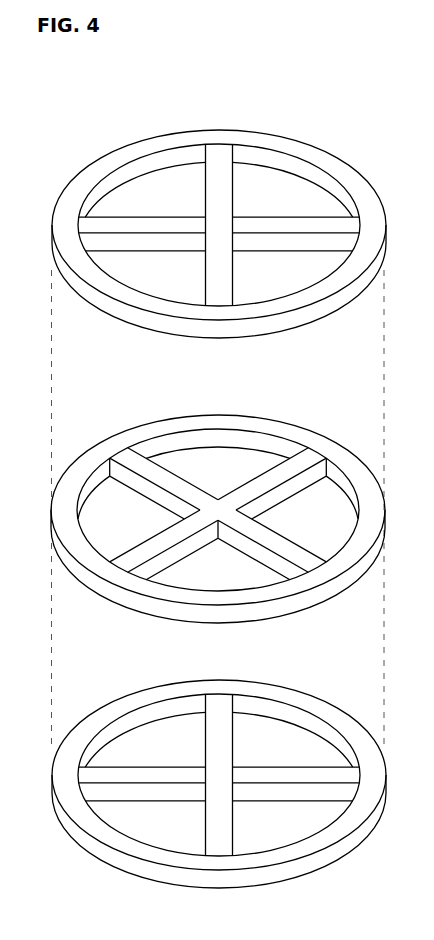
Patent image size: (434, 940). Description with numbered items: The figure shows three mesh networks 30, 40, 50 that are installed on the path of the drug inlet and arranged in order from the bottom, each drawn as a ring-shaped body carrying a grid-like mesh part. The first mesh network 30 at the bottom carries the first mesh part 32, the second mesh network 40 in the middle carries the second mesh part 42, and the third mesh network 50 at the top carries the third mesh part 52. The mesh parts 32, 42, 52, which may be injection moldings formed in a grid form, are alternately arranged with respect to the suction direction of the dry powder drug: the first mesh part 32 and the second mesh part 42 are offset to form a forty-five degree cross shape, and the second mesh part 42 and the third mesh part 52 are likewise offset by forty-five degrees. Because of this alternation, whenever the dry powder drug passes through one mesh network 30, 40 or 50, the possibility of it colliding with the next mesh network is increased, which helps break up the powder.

The third mesh network 50 is at (163, 145).
The third mesh part 52 is at (280, 223).
The second mesh network 40 is at (181, 426).
The second mesh part 42 is at (272, 482).
The first mesh network 30 is at (163, 695).
The first mesh part 32 is at (280, 773).